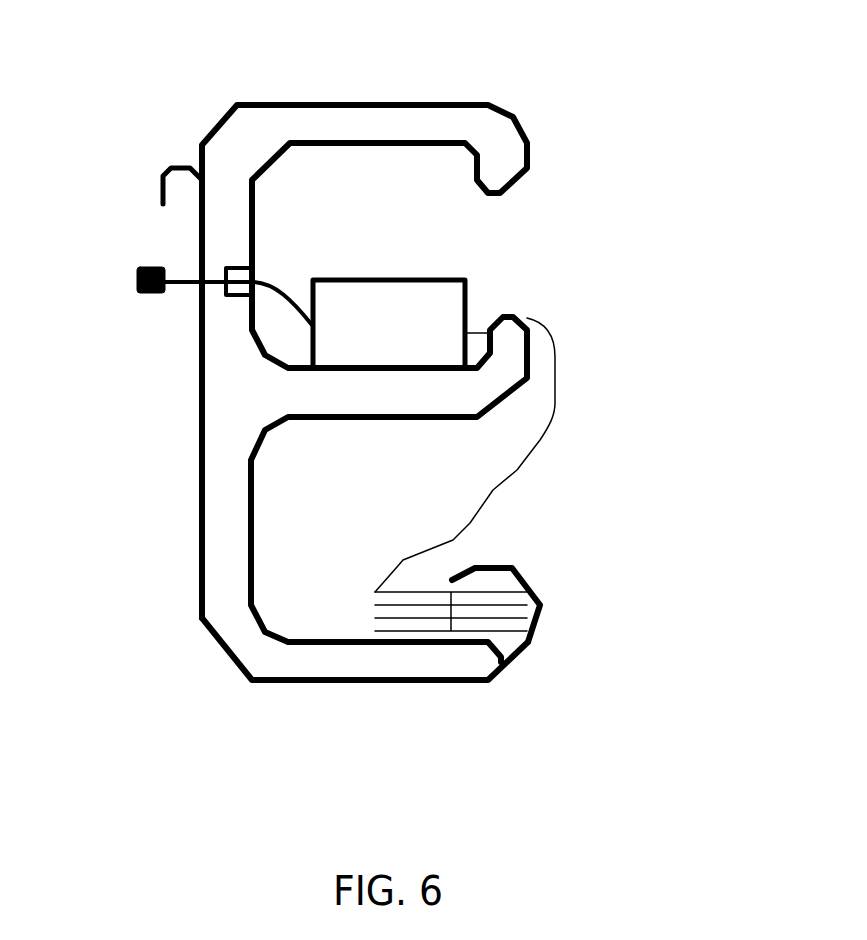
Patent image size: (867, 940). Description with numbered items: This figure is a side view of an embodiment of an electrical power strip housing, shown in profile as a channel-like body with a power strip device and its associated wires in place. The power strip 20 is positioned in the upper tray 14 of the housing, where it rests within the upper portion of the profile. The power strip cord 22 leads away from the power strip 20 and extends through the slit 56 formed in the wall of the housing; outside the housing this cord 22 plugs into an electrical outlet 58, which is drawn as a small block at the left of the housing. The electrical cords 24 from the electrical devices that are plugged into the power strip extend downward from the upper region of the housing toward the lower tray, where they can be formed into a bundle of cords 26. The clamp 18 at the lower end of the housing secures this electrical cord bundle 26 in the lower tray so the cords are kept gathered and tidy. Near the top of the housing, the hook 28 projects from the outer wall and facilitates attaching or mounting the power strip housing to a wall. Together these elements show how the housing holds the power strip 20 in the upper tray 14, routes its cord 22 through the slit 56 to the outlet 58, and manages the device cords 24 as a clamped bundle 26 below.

The upper tray 14 is at (513, 318).
The clamp 18 is at (540, 605).
The power strip 20 is at (465, 292).
The power strip cord 22 is at (288, 290).
The electrical cords 24 is at (517, 468).
The bundle of cords 26 is at (502, 632).
The hook 28 is at (163, 178).
The slit 56 is at (227, 265).
The electrical outlet 58 is at (152, 293).